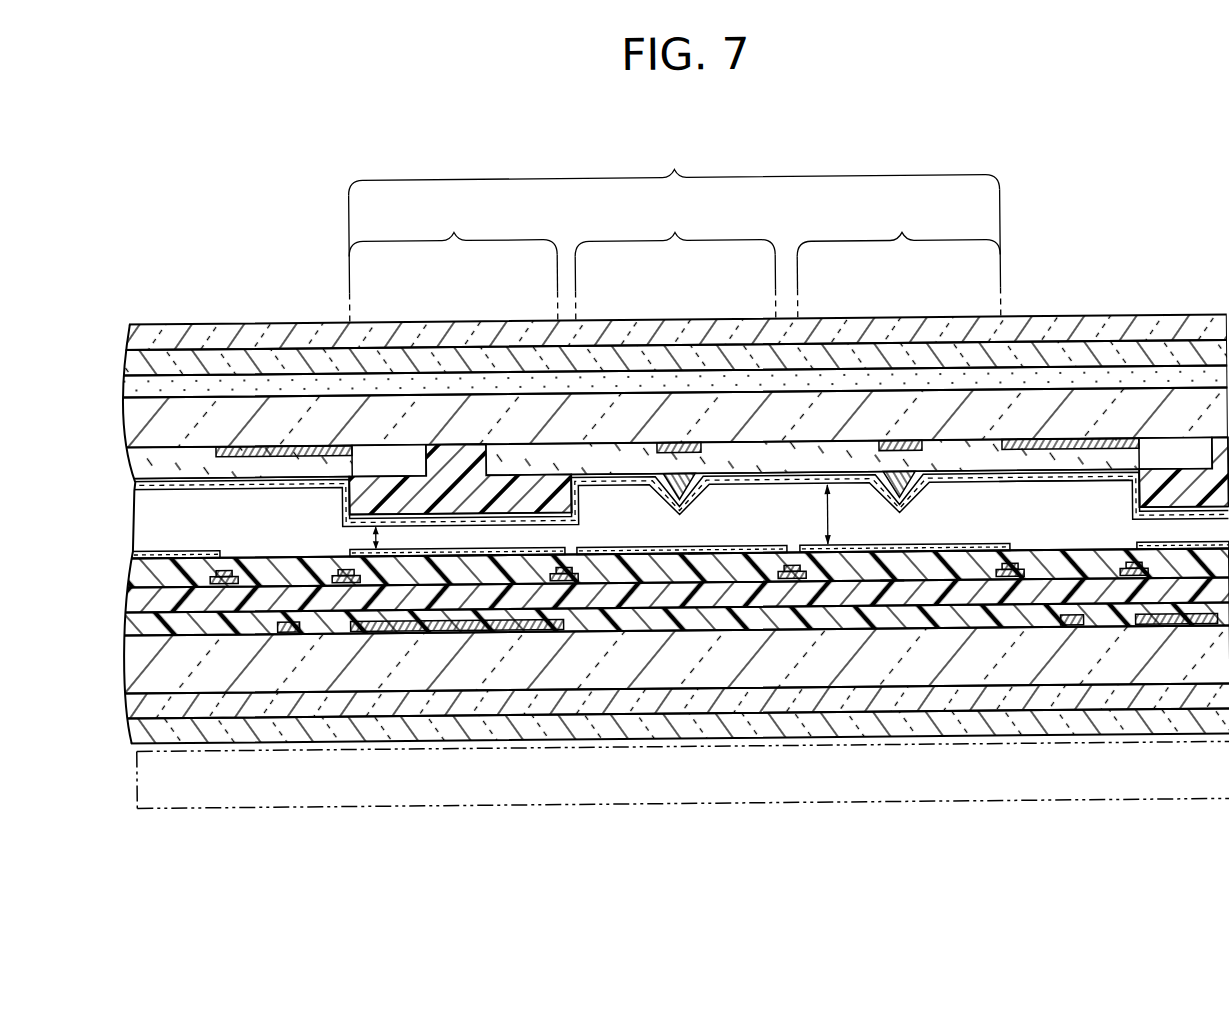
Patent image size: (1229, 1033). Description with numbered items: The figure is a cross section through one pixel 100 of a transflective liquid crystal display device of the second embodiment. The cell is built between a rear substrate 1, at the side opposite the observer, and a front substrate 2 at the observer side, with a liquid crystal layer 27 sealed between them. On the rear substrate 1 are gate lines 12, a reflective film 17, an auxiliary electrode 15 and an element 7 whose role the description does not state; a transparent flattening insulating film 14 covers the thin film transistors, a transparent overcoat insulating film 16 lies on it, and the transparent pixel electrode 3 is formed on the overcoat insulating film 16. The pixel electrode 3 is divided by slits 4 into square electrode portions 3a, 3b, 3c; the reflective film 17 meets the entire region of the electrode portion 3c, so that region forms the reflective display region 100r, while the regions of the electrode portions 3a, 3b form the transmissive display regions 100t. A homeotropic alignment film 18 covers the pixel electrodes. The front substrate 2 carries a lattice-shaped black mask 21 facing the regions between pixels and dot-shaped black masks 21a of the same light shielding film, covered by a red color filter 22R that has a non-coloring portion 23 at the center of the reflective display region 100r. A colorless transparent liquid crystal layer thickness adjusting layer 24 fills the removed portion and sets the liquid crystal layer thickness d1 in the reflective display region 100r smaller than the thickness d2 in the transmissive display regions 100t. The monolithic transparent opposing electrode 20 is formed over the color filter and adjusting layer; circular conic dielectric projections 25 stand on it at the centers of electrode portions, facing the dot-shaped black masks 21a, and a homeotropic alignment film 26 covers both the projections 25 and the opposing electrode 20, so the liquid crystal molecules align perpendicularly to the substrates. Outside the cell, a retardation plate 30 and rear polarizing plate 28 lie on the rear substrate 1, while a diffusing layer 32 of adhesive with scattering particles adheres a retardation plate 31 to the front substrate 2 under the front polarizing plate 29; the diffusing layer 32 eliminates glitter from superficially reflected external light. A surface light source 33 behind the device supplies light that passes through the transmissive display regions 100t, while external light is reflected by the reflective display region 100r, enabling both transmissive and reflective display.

The rear substrate 1 is at (150, 664).
The front substrate 2 is at (150, 429).
The pixel electrode 3 is at (393, 570).
The electrode portion 3a is at (891, 587).
The electrode portion 3b is at (699, 562).
The electrode portion 3c is at (504, 560).
The slit 4 is at (582, 551).
The gate insulating film 7 is at (613, 624).
The gate line 12 is at (286, 634).
The flattening insulating film 14 is at (836, 603).
The auxiliary electrode 15 is at (223, 587).
The overcoat insulating film 16 is at (953, 562).
The reflective film 17 is at (441, 635).
The homeotropic alignment film 18 is at (1100, 551).
The opposing electrode 20 is at (747, 481).
The black mask 21 is at (284, 447).
The dot-shaped black mask 21a is at (684, 447).
The red color filter 22R is at (188, 465).
The non-coloring portion 23 is at (460, 438).
The liquid crystal layer thickness adjusting layer 24 is at (521, 481).
The projection 25 is at (668, 500).
The homeotropic alignment film 26 is at (1038, 490).
The liquid crystal layer 27 is at (148, 526).
The rear polarizing plate 28 is at (148, 731).
The front polarizing plate 29 is at (148, 332).
The retardation plate 30 is at (148, 706).
The retardation plate 31 is at (148, 359).
The diffusing layer 32 is at (148, 384).
The surface light source 33 is at (148, 778).
The pixel 100 is at (674, 229).
The reflective display region 100r is at (453, 262).
The transmissive display region 100t is at (788, 259).
The liquid crystal layer thickness in reflective display region d1 is at (369, 531).
The liquid crystal layer thickness in transmissive display region d2 is at (833, 520).